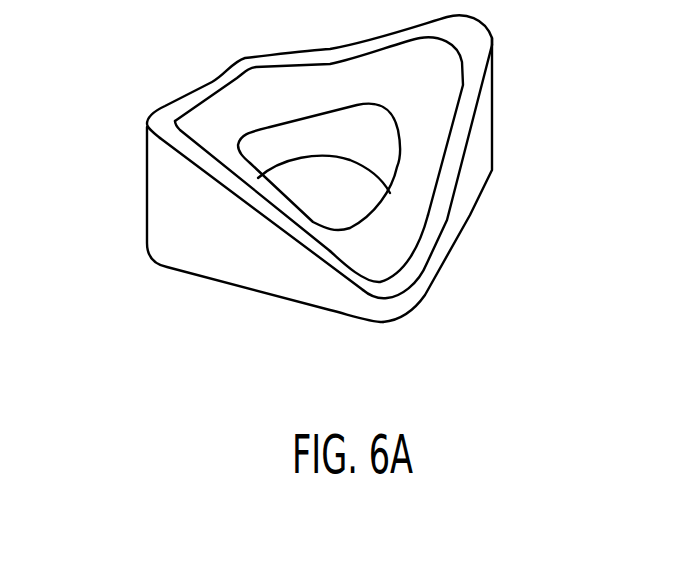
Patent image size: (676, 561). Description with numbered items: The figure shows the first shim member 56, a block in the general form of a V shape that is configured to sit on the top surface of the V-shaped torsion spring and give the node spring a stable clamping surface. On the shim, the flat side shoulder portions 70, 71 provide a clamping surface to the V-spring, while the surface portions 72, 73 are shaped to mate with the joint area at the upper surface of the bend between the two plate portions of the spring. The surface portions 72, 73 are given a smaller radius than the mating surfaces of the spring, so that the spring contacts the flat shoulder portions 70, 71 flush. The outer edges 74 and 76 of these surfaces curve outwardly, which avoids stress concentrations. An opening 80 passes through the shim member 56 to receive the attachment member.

The first shim member 56 is at (145, 100).
The flat side shoulder portion 70 is at (203, 142).
The flat side shoulder portion 71 is at (437, 80).
The surface portion 72 is at (233, 110).
The surface portion 73 is at (397, 253).
The outer edge 74 is at (233, 187).
The outer edge 76 is at (440, 195).
The opening 80 is at (323, 203).